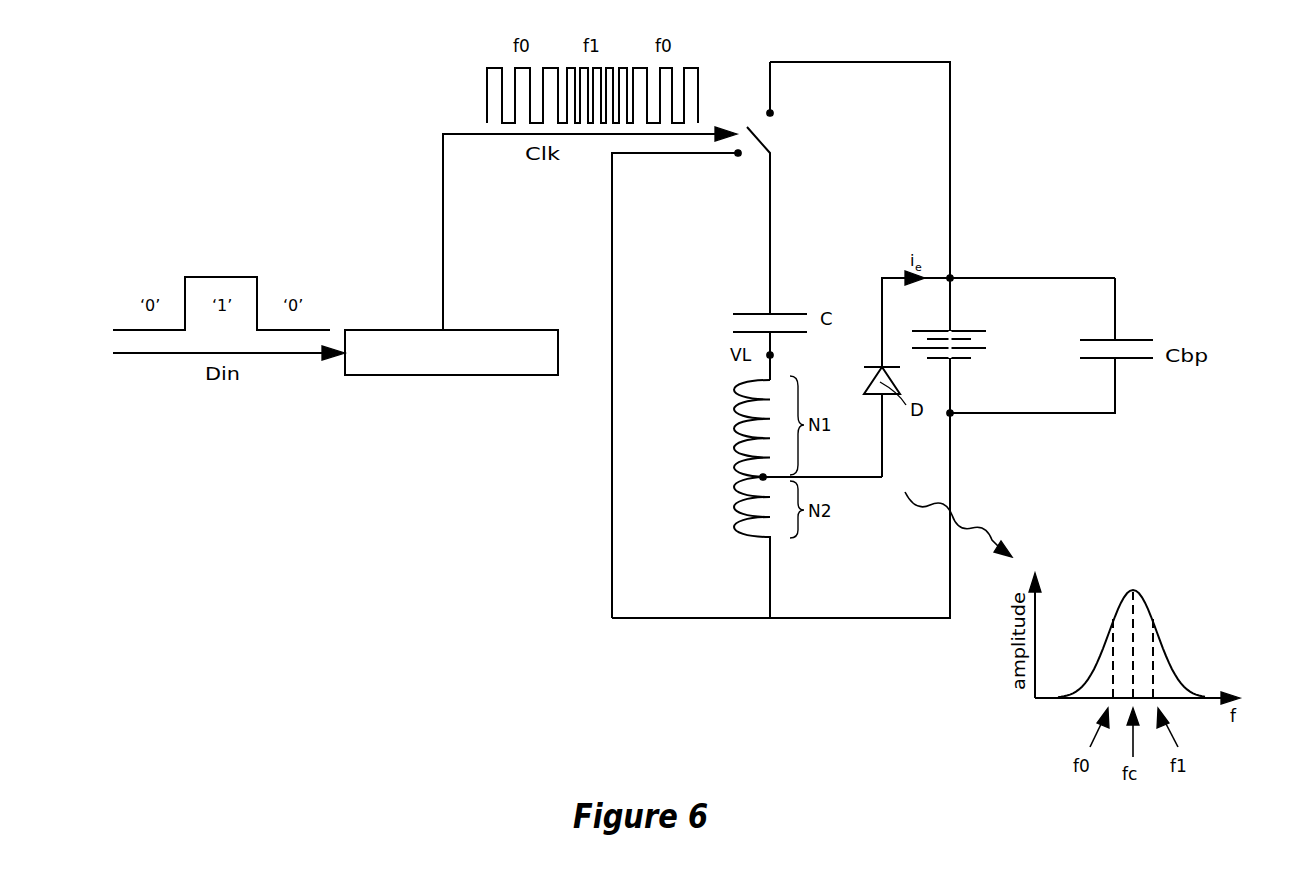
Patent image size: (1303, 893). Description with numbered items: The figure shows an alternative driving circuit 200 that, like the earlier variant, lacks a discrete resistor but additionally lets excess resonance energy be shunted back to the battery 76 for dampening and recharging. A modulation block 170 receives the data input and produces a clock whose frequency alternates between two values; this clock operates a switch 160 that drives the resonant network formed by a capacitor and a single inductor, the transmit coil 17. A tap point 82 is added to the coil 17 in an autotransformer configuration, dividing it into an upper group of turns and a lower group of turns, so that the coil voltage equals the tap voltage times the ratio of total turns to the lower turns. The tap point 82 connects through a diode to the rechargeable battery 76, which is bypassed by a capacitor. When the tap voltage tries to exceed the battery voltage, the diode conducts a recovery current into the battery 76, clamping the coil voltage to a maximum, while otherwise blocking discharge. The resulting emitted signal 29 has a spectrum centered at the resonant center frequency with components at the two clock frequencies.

The driving circuit 200 is at (280, 123).
The switch 160 is at (781, 188).
The modulation block 170 is at (451, 352).
The transmit coil 17 is at (729, 499).
The tap point 82 is at (766, 480).
The rechargeable battery 76 is at (979, 343).
The emitted RF signal 29 is at (1000, 530).